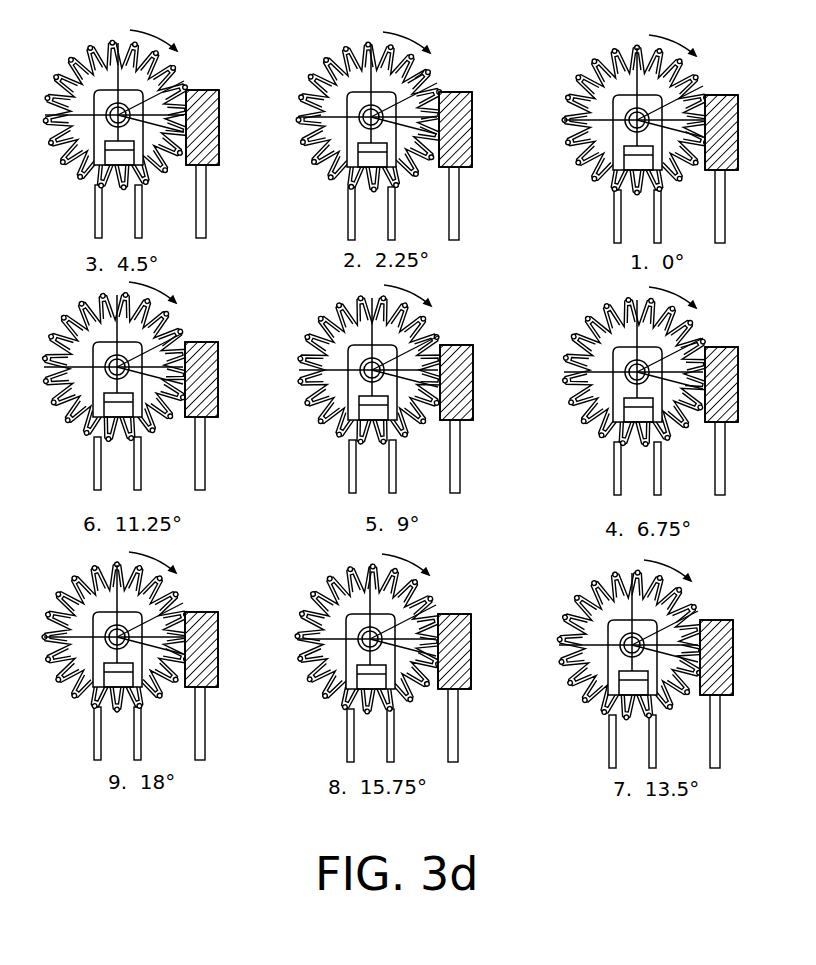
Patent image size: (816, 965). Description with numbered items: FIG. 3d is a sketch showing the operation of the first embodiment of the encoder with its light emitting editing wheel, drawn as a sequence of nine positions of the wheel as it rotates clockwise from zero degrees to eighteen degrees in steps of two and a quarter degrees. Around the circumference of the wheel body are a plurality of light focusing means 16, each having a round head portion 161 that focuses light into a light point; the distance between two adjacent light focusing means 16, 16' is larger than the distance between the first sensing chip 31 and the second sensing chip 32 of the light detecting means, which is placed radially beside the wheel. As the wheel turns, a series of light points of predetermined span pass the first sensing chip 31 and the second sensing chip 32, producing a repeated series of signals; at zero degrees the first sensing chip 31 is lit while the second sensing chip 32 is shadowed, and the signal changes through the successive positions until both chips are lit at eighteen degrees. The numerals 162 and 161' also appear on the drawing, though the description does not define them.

The light focusing means 16 is at (370, 97).
The adjacent light focusing means 16' is at (455, 63).
The upper light path of editing wheel 162 is at (437, 94).
The round head portion 161 is at (441, 114).
The first sensing chip 31 is at (477, 129).
The second sensing chip 32 is at (477, 129).
The sensor lead 161' is at (486, 203).